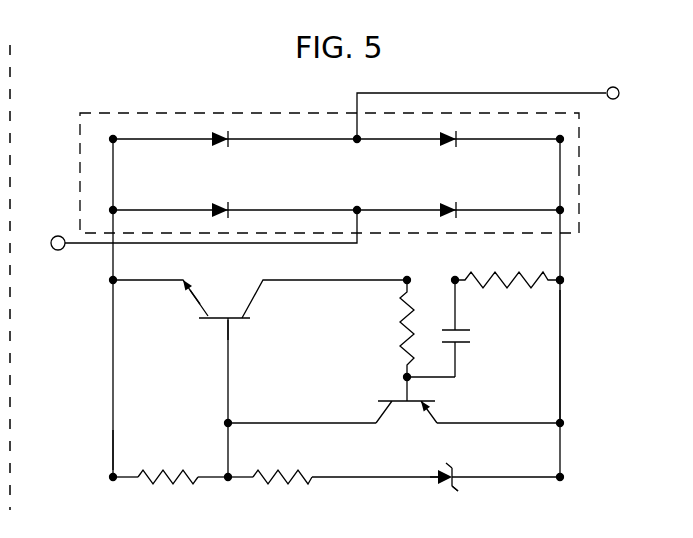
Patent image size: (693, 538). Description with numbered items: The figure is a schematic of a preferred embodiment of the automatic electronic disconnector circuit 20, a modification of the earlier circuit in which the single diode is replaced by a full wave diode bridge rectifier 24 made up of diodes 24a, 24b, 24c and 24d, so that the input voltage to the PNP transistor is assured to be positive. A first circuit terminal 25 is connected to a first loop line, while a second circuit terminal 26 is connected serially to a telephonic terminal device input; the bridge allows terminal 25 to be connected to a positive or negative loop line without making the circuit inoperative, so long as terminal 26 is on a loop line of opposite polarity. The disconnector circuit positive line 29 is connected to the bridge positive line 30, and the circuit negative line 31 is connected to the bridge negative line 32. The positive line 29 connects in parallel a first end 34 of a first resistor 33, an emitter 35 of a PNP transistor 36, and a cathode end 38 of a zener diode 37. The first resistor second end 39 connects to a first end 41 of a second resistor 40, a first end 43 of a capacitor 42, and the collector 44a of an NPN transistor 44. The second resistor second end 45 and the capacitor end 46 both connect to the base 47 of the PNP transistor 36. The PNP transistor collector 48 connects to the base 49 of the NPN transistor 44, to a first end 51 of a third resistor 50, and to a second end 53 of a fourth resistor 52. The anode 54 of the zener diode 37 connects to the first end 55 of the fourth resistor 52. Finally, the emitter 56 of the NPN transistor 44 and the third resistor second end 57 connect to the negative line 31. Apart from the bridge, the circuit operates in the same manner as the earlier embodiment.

The disconnector circuit 20 is at (206, 86).
The full wave diode bridge rectifier 24 is at (78, 193).
The diode 24a is at (432, 148).
The diode 24b is at (213, 150).
The diode 24c is at (226, 206).
The diode 24d is at (430, 217).
The first circuit terminal 25 is at (608, 90).
The second circuit terminal 26 is at (50, 246).
The disconnector circuit positive line 29 is at (562, 348).
The bridge positive line 30 is at (560, 197).
The circuit negative line 31 is at (113, 436).
The bridge negative line 32 is at (113, 190).
The first resistor 33 is at (508, 278).
The first resistor first end 34 is at (561, 276).
The emitter of the PNP transistor 35 is at (432, 422).
The PNP transistor 36 is at (372, 402).
The zener diode 37 is at (447, 494).
The zener diode cathode end 38 is at (454, 470).
The first resistor second end 39 is at (452, 278).
The second resistor 40 is at (402, 318).
The second resistor first end 41 is at (405, 278).
The capacitor 42 is at (470, 334).
The capacitor first end 43 is at (457, 302).
The NPN transistor 44 is at (249, 324).
The NPN transistor collector 44a is at (258, 300).
The second resistor second end 45 is at (412, 376).
The capacitor end 46 is at (458, 358).
The base of the PNP transistor 47 is at (404, 378).
The PNP transistor collector 48 is at (386, 422).
The NPN transistor base 49 is at (228, 326).
The third resistor 50 is at (162, 483).
The third resistor first end 51 is at (212, 474).
The fourth resistor 52 is at (286, 483).
The fourth resistor second end 53 is at (240, 474).
The anode of the zener diode 54 is at (436, 479).
The fourth resistor first end 55 is at (316, 474).
The emitter of the NPN transistor 56 is at (200, 310).
The third resistor second end 57 is at (128, 474).